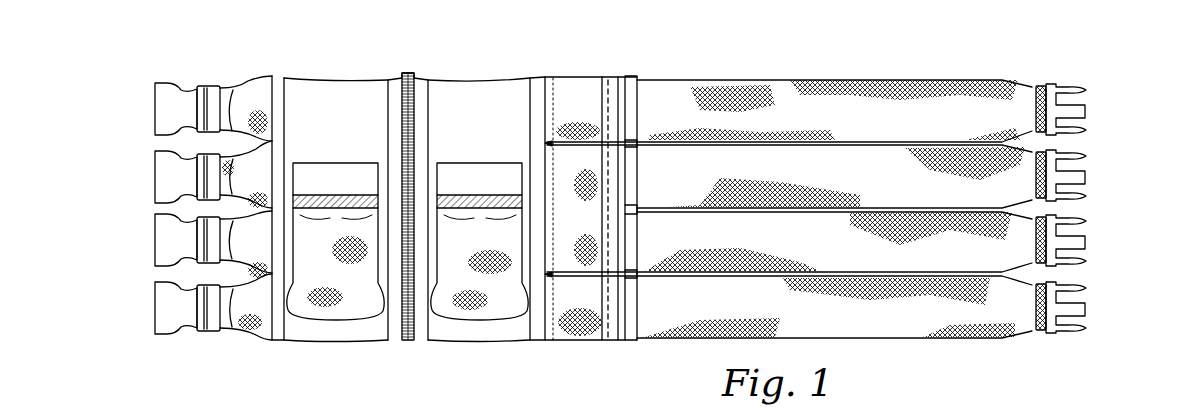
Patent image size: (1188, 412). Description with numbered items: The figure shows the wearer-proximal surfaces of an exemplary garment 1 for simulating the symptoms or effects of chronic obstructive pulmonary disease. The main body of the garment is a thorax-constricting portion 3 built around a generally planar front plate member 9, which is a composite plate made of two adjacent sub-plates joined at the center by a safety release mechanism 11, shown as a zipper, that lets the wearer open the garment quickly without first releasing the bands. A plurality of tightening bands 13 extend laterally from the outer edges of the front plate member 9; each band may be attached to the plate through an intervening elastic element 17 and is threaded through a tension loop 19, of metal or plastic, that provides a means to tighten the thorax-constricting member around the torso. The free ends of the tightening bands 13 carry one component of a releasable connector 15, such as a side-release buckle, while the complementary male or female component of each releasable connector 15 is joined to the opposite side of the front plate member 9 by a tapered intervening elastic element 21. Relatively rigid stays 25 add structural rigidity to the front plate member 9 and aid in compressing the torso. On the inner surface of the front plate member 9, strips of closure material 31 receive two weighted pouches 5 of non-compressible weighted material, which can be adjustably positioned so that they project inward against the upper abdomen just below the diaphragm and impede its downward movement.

The garment 1 is at (1106, 50).
The thorax-constricting portion 3 is at (609, 62).
The weighted pouches 5 is at (450, 300).
The front plate member 9 is at (456, 100).
The safety release mechanism 11 is at (418, 127).
The tightening bands 13 is at (862, 170).
The releasable connectors 15 is at (165, 175).
The intervening elastic element 17 is at (566, 167).
The tension loop 19 is at (633, 340).
The intervening elastic element 21 is at (253, 93).
The stays 25 is at (537, 340).
The closure material 31 is at (343, 333).